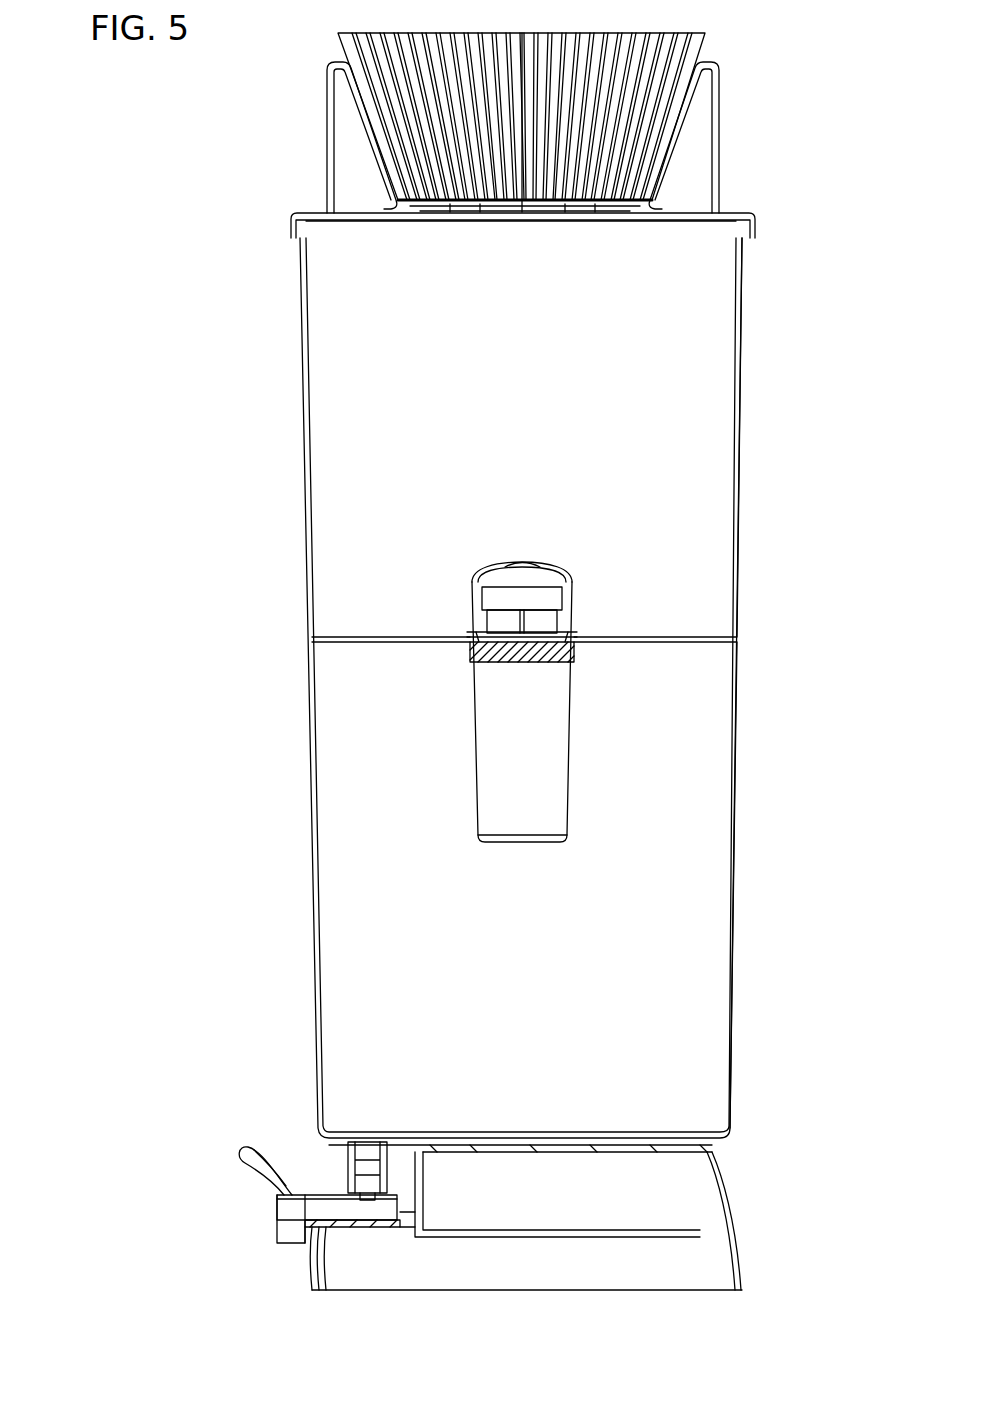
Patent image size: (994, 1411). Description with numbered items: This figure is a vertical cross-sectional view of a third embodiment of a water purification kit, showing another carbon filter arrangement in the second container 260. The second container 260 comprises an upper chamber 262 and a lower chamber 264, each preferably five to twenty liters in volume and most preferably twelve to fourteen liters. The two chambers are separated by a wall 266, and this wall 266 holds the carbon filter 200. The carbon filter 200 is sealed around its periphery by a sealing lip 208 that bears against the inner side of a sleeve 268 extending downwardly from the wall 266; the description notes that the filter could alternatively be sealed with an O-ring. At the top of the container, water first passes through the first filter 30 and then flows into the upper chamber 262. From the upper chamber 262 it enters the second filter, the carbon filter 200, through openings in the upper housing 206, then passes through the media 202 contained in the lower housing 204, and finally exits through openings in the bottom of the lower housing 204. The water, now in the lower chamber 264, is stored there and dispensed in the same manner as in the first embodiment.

The first filter 30 is at (693, 95).
The carbon filter 200 is at (452, 691).
The media 202 is at (523, 772).
The lower housing 204 is at (567, 803).
The upper housing 206 is at (470, 590).
The sealing lip 208 is at (468, 632).
The second container 260 is at (303, 432).
The upper chamber 262 is at (733, 407).
The lower chamber 264 is at (727, 978).
The wall 266 is at (350, 637).
The sleeve 268 is at (472, 655).